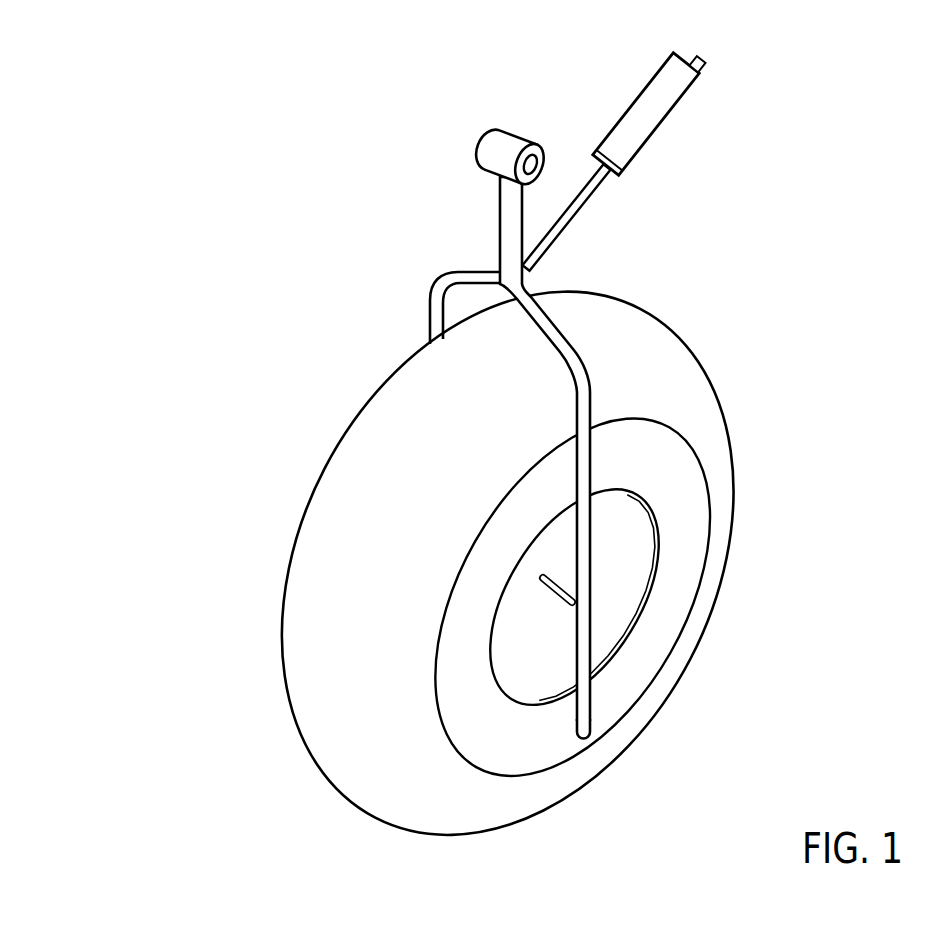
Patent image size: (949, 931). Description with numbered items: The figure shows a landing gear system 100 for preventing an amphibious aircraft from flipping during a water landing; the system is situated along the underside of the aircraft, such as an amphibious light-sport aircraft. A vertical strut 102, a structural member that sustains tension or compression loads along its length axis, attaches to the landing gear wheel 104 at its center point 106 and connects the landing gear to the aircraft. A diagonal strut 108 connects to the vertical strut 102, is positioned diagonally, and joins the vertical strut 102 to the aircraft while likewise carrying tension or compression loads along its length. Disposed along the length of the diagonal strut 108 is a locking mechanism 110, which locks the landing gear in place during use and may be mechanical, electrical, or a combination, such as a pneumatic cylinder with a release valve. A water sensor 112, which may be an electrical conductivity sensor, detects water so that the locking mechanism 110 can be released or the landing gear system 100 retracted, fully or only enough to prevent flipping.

The landing gear system 100 is at (283, 242).
The vertical strut 102 is at (498, 230).
The landing gear wheel 104 is at (697, 637).
The center point 106 is at (540, 577).
The diagonal strut 108 is at (580, 175).
The locking mechanism 110 is at (650, 160).
The water sensor 112 is at (590, 747).